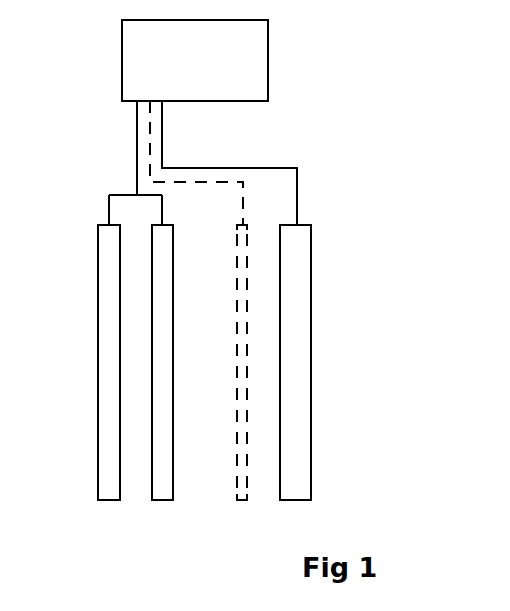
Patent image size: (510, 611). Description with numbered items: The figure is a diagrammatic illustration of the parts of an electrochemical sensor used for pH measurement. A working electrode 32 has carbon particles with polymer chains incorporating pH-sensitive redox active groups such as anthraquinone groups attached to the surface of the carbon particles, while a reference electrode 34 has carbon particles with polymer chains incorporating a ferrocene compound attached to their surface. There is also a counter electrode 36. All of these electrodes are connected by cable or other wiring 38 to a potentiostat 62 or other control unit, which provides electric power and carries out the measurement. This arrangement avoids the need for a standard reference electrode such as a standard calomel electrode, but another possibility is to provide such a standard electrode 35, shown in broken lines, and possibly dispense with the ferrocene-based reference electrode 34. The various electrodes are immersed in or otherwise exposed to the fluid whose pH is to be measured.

The potentiostat 62 is at (195, 60).
The wiring 38 is at (142, 137).
The working electrode 32 is at (107, 277).
The reference electrode 34 is at (165, 430).
The standard electrode 35 is at (237, 388).
The counter electrode 36 is at (297, 290).